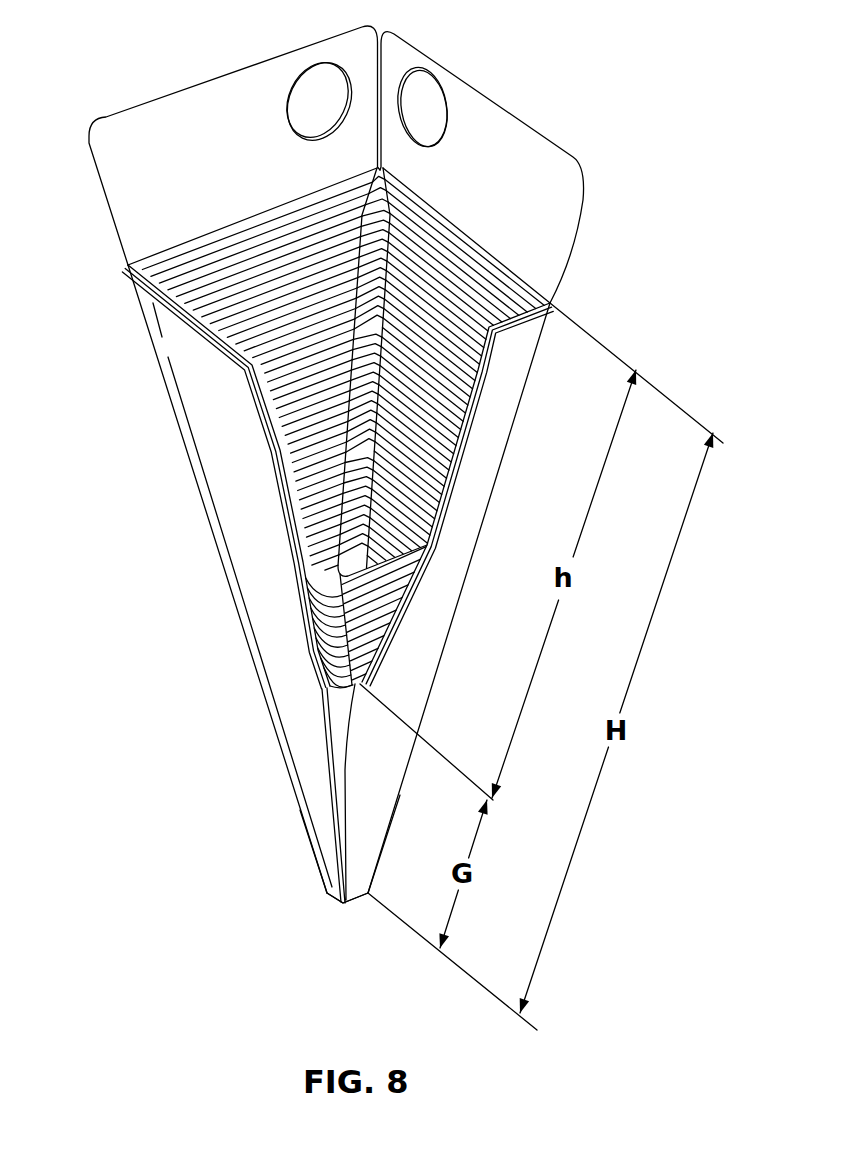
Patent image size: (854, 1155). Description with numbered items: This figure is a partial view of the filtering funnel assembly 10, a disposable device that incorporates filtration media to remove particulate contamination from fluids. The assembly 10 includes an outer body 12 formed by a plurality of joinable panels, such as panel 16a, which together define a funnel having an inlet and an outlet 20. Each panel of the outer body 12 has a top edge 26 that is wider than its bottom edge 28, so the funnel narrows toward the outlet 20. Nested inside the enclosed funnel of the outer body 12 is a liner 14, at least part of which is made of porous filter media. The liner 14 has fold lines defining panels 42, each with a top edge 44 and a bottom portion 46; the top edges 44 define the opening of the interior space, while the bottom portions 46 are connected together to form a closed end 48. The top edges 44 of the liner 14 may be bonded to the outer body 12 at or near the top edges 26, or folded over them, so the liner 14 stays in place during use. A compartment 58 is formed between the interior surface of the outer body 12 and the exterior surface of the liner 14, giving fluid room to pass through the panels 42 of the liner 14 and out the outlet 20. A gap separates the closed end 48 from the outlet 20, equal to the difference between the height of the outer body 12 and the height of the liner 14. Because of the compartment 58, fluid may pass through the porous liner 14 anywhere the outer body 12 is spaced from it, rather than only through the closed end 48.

The filtering funnel assembly 10 is at (117, 100).
The outer body 12 is at (203, 80).
The liner 14 is at (193, 236).
The panel 16a is at (243, 455).
The outlet 20 is at (360, 907).
The top edge 26 is at (180, 310).
The bottom edge 28 is at (337, 902).
The panel 42 is at (433, 365).
The top edge 44 is at (460, 233).
The bottom portion 46 is at (337, 667).
The closed end 48 is at (333, 693).
The compartment 58 is at (345, 728).